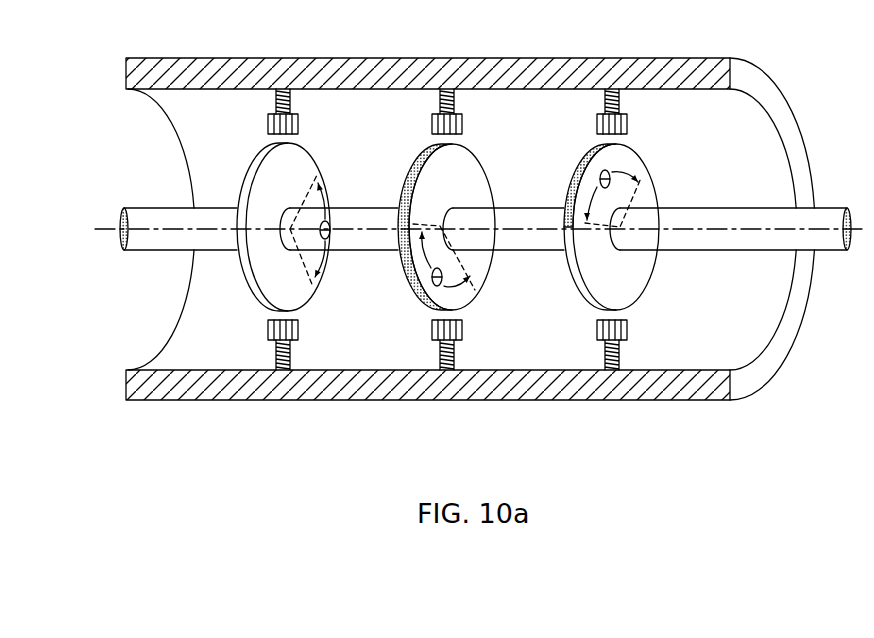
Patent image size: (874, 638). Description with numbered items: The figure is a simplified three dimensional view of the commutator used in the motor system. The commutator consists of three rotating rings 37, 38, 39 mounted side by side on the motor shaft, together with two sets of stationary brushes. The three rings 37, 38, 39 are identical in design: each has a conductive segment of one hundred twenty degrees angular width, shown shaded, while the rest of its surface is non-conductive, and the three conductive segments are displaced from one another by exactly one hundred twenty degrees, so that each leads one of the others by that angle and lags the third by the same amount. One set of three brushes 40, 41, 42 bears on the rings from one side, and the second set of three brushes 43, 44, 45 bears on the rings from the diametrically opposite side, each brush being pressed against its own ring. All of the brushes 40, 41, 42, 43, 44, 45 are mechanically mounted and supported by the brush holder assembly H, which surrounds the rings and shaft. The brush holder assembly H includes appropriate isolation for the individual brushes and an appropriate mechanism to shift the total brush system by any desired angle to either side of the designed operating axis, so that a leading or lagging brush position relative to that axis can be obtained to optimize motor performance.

The brush holder assembly H is at (769, 71).
The rotating ring 37 is at (645, 158).
The rotating ring 38 is at (482, 158).
The rotating ring 39 is at (319, 159).
The brush 40 is at (635, 125).
The brush 41 is at (470, 121).
The brush 42 is at (305, 121).
The brush 43 is at (635, 335).
The brush 44 is at (470, 332).
The brush 45 is at (305, 332).